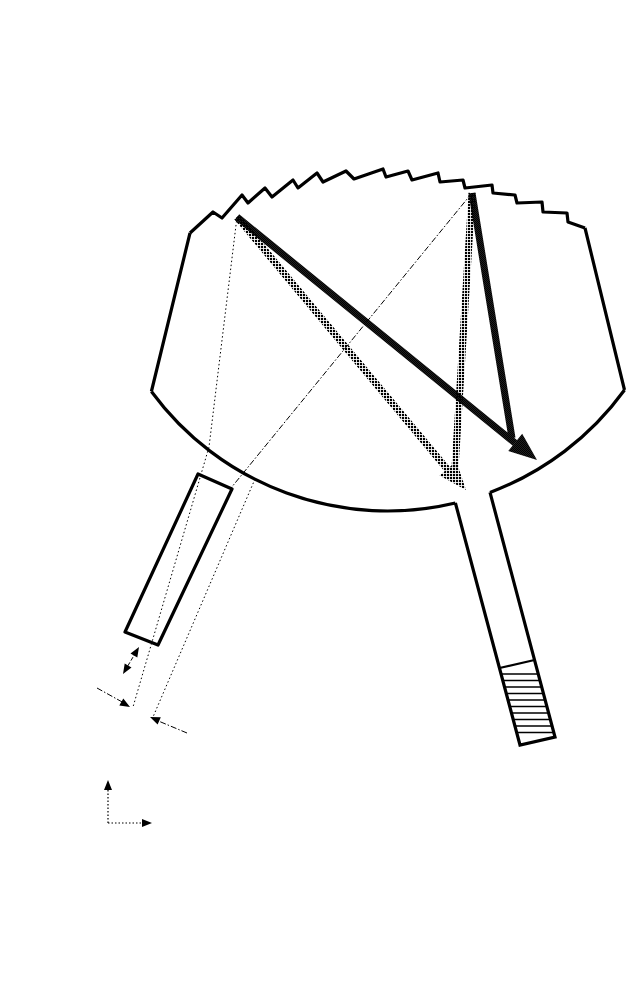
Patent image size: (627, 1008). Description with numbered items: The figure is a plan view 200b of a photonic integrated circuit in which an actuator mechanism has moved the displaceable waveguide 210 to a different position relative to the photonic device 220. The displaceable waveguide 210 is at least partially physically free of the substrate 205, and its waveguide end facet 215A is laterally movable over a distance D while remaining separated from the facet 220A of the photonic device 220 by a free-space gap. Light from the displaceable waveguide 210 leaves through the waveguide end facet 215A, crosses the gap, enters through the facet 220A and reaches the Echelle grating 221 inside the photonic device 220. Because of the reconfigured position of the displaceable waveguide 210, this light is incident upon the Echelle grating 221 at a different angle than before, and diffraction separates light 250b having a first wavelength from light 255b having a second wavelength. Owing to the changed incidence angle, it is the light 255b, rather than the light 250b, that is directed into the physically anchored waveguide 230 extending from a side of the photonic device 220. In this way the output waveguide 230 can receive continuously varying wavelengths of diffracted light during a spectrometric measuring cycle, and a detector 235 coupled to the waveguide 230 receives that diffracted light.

The plan view 200b is at (182, 118).
The substrate 205 is at (342, 628).
The displaceable waveguide 210 is at (156, 604).
The waveguide end facet 215A is at (221, 477).
The photonic device 220 is at (570, 304).
The facet 220A is at (287, 496).
The Echelle grating 221 is at (549, 203).
The waveguide 230 is at (515, 650).
The detector 235 is at (552, 698).
The light 250b is at (568, 361).
The light 255b is at (423, 420).